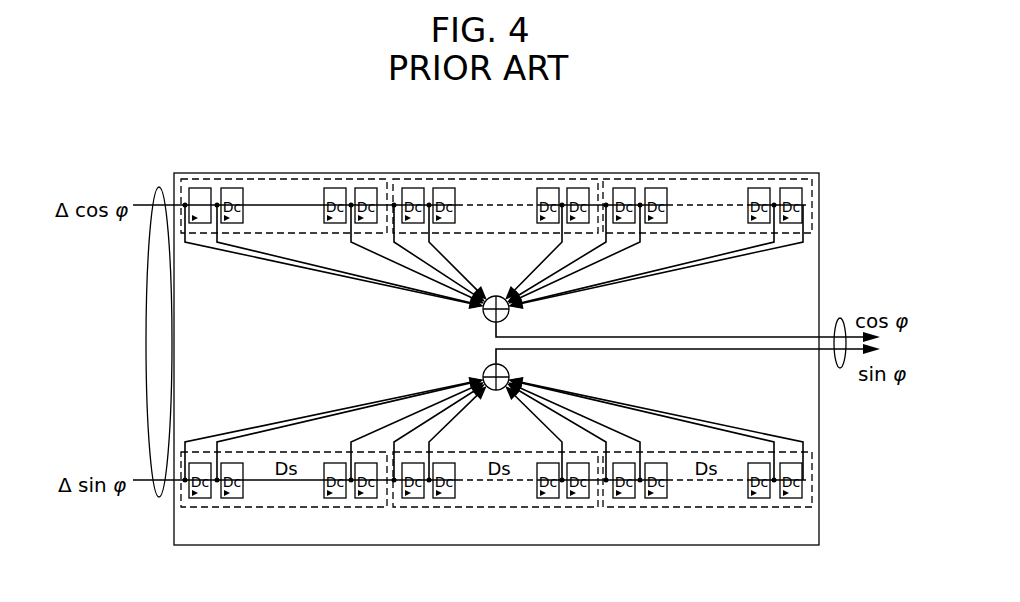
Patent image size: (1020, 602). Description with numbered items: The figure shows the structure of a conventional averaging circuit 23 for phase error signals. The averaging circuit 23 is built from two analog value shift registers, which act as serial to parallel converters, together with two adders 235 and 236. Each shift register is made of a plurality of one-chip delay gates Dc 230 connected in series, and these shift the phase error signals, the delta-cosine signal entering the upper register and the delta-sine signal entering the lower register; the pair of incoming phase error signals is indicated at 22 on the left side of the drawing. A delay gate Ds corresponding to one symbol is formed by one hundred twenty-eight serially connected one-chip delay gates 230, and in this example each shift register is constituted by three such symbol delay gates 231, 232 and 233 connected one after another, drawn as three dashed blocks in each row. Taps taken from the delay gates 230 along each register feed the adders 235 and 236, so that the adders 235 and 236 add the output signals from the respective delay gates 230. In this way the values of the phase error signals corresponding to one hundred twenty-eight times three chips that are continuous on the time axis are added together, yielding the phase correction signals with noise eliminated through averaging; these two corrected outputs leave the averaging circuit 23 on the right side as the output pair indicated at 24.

The input signal pair (Δcos φ, Δsin φ) 22 is at (158, 187).
The averaging circuit 23 is at (495, 173).
The output signal pair (cos φ, sin φ) 24 is at (841, 318).
The one-chip delay gate 230 is at (200, 188).
The symbol delay gate 231 is at (284, 180).
The symbol delay gate 232 is at (418, 180).
The symbol delay gate 233 is at (673, 180).
The adder 235 is at (490, 320).
The adder 236 is at (505, 365).